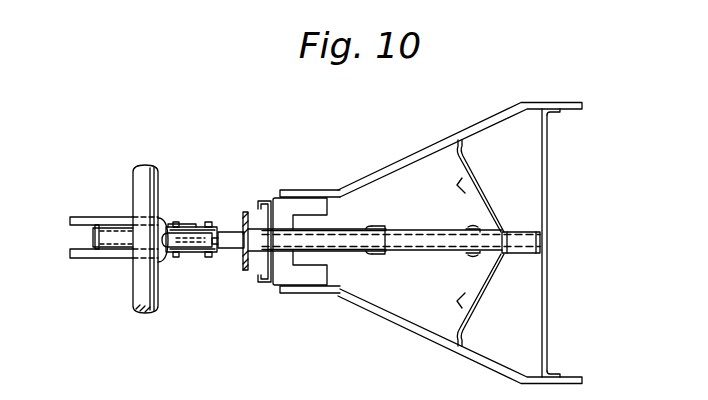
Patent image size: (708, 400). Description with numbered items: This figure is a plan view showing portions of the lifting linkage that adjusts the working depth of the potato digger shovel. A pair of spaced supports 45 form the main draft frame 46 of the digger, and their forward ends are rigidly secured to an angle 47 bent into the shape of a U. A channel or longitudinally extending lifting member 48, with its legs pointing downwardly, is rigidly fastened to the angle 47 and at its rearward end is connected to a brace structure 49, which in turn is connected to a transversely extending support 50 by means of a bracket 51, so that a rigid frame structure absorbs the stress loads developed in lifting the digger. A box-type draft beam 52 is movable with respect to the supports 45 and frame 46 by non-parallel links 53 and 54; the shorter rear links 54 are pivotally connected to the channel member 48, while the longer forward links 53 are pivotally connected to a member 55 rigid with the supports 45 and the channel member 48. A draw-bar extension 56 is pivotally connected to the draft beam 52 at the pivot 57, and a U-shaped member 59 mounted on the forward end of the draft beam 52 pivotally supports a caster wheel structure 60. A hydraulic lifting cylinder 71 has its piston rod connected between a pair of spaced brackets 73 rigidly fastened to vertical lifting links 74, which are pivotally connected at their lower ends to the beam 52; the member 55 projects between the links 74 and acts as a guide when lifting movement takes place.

The supports 45 is at (288, 190).
The main draft frame 46 is at (359, 300).
The angle 47 is at (306, 214).
The channel or longitudinally extending lifting member 48 is at (416, 251).
The brace structure 49 is at (504, 262).
The transversely extending support 50 is at (548, 177).
The bracket 51 is at (521, 244).
The box-type draft beam 52 is at (190, 224).
The forward links 53 is at (347, 228).
The rear links 54 is at (474, 232).
The member 55 is at (400, 230).
The draw-bar extension 56 is at (100, 217).
The pivotal connection 57 is at (184, 242).
The U-shaped member 59 is at (98, 236).
The caster wheel structure 60 is at (144, 289).
The hydraulic lifting cylinder 71 is at (184, 249).
The spaced brackets 73 is at (218, 222).
The vertical lifting links 74 is at (246, 212).